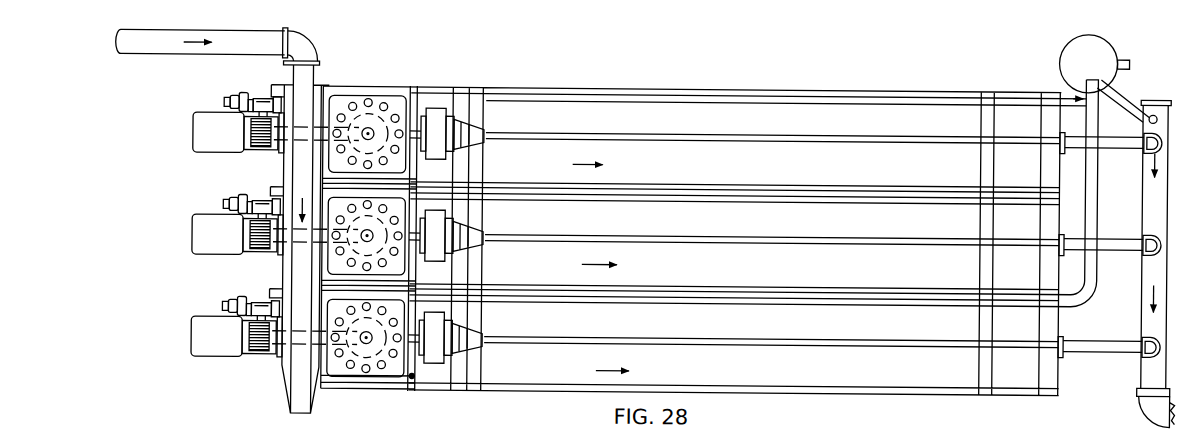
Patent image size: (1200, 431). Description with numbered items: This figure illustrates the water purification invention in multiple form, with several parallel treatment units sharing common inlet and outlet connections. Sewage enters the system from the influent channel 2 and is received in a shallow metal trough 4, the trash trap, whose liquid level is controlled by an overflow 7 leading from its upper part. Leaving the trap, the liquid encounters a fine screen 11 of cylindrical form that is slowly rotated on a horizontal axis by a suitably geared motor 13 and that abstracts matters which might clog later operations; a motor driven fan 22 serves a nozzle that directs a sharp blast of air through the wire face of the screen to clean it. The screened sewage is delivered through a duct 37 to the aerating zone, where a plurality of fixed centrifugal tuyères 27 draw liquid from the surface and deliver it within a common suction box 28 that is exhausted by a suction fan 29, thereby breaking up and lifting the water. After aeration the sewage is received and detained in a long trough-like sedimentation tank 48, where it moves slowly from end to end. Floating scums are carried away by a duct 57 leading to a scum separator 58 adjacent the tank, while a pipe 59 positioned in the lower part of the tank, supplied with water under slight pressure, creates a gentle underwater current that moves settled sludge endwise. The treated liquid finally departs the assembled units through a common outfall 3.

The influent channel 2 is at (170, 30).
The outfall 3 is at (1122, 138).
The trough 4 is at (317, 88).
The overflow 7 is at (282, 85).
The fine screen 11 is at (248, 151).
The motor 13 is at (261, 100).
The fan 22 is at (240, 95).
The tuyères 27 is at (384, 104).
The suction box 28 is at (345, 100).
The suction fan 29 is at (453, 120).
The duct 37 is at (302, 135).
The sedimentation tank 48 is at (638, 109).
The duct 57 is at (1087, 86).
The scum separator 58 is at (1065, 52).
The pipe 59 is at (772, 131).